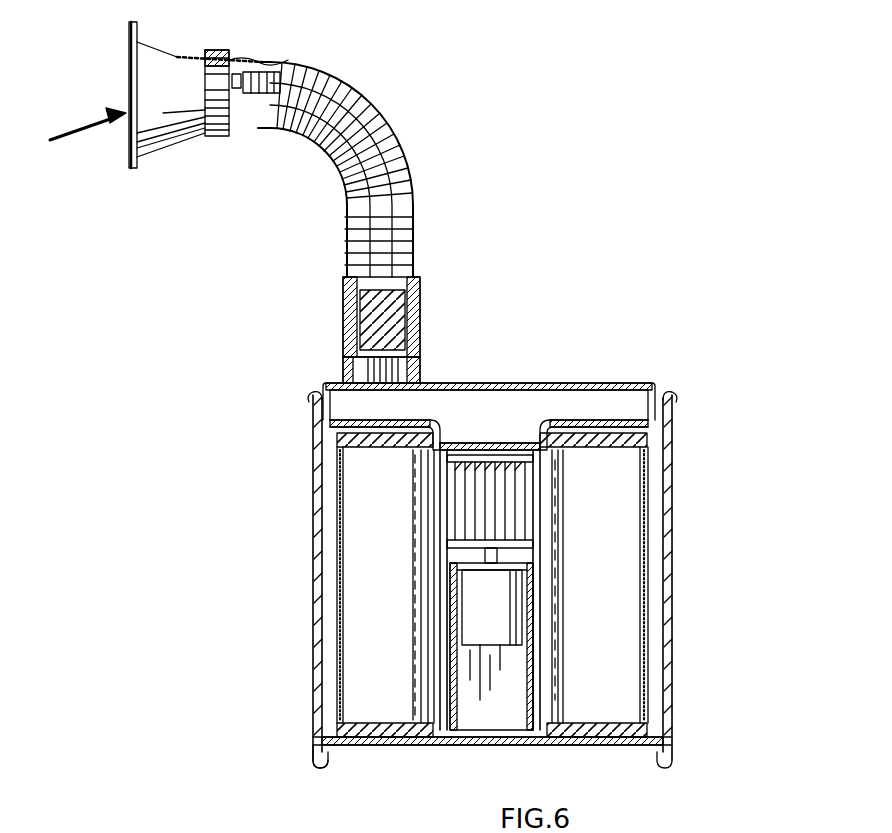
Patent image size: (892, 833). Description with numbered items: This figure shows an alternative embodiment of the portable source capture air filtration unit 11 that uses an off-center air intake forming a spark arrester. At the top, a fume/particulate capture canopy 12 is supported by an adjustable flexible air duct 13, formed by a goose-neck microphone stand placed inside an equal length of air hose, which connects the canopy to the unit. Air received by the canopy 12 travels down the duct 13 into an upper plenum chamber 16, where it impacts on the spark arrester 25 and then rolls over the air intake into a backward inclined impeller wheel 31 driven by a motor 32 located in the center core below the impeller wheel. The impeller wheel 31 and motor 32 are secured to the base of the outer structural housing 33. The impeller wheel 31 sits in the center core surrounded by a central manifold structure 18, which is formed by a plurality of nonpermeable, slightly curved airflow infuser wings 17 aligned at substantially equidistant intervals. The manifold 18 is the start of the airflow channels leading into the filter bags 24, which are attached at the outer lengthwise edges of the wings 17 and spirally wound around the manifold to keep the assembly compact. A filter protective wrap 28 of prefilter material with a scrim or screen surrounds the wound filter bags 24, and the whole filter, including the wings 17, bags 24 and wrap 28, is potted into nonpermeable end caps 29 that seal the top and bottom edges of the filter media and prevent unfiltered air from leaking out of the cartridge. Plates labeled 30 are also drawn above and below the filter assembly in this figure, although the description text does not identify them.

The portable source capture air filtration unit 11 is at (707, 514).
The fume/particulate capture canopy 12 is at (177, 60).
The adjustable flexible air duct 13 is at (413, 213).
The upper plenum chamber 16 is at (480, 407).
The airflow infuser wings 17 is at (548, 604).
The central manifold structure 18 is at (550, 495).
The filter bags 24 is at (622, 651).
The spark arrester 25 is at (377, 420).
The filter protective wrap 28 is at (337, 637).
The end caps 29 is at (366, 747).
The support plate 30 is at (653, 440).
The backward inclined impeller wheel 31 is at (497, 490).
The motor 32 is at (503, 614).
The outer structural housing 33 is at (672, 685).